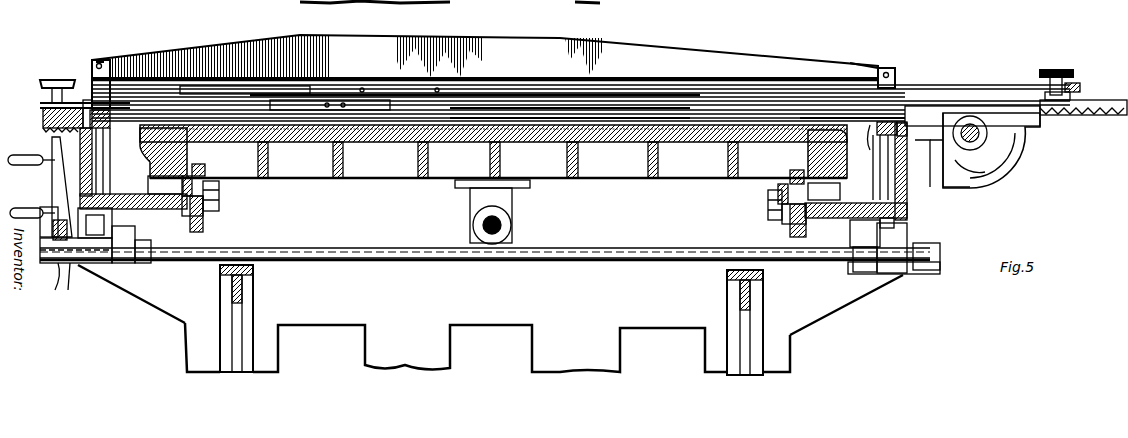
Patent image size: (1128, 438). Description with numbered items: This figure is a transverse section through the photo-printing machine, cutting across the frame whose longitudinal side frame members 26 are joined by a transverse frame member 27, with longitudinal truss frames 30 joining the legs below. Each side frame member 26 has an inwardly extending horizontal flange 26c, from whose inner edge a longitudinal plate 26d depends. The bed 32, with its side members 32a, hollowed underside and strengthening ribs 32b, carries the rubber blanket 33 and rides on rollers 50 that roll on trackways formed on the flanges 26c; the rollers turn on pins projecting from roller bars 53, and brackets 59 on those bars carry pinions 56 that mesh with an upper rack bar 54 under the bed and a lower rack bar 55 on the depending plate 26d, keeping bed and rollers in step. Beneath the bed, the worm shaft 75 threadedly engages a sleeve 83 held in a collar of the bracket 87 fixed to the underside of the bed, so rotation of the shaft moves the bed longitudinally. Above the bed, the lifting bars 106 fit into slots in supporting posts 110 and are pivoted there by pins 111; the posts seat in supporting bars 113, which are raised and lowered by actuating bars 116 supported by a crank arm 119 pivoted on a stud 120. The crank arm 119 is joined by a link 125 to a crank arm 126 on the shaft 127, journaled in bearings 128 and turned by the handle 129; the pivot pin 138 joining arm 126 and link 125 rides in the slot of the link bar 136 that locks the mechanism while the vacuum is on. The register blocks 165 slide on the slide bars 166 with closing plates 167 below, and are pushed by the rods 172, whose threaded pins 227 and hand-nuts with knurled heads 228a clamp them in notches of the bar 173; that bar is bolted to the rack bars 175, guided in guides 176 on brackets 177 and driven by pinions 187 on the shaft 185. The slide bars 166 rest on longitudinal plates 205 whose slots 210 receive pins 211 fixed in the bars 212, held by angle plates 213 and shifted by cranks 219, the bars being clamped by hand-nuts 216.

The lifting bar 106 is at (503, 44).
The rod 172 is at (350, 90).
The register block 165 is at (305, 106).
The slide bar 166 is at (185, 110).
The plate 167 is at (190, 112).
The supporting post 110 is at (110, 65).
The pin 111 is at (100, 64).
The longitudinal slot 210 is at (876, 68).
The longitudinal plate 205 is at (80, 110).
The supporting bar 113 is at (102, 118).
The actuating bar 116 is at (120, 116).
The pin 211 is at (57, 78).
The hand-nut 216 is at (45, 80).
The angle plate 213 is at (43, 112).
The bar 212 is at (43, 130).
The crank 219 is at (55, 180).
The handle 129 is at (15, 208).
The stud 120 is at (104, 160).
The crank arm 119 is at (106, 182).
The rubber blanket 33 is at (867, 139).
The side member 32a is at (150, 140).
The bed 32 is at (612, 150).
The strengthening rib 32b is at (350, 160).
The roller 50 is at (494, 188).
The upper rack bar 54 is at (205, 168).
The roller bar 53 is at (205, 180).
The bracket 59 is at (220, 190).
The pinion 56 is at (204, 205).
The lower rack bar 55 is at (205, 228).
The longitudinal plate 26d is at (180, 215).
The side frame member 26 is at (53, 228).
The link 125 is at (112, 218).
The crank arm 126 is at (122, 232).
The shaft 127 is at (148, 250).
The bearing 128 is at (92, 265).
The link bar 136 is at (55, 272).
The pivot pin 138 is at (66, 290).
The horizontal flange 26c is at (165, 300).
The transverse frame member 27 is at (488, 326).
The longitudinal truss frame 30 is at (238, 325).
The bracket 87 is at (470, 198).
The sleeve 83 is at (511, 224).
The worm shaft 75 is at (472, 225).
The guide 176 is at (978, 108).
The bracket 177 is at (1015, 140).
The longitudinal shaft 185 is at (980, 142).
The pinion 187 is at (1000, 170).
The rack bar 175 is at (1100, 115).
The threaded pin 227 is at (1057, 68).
The knurled head 228a is at (1078, 82).
The bar 173 is at (1072, 92).